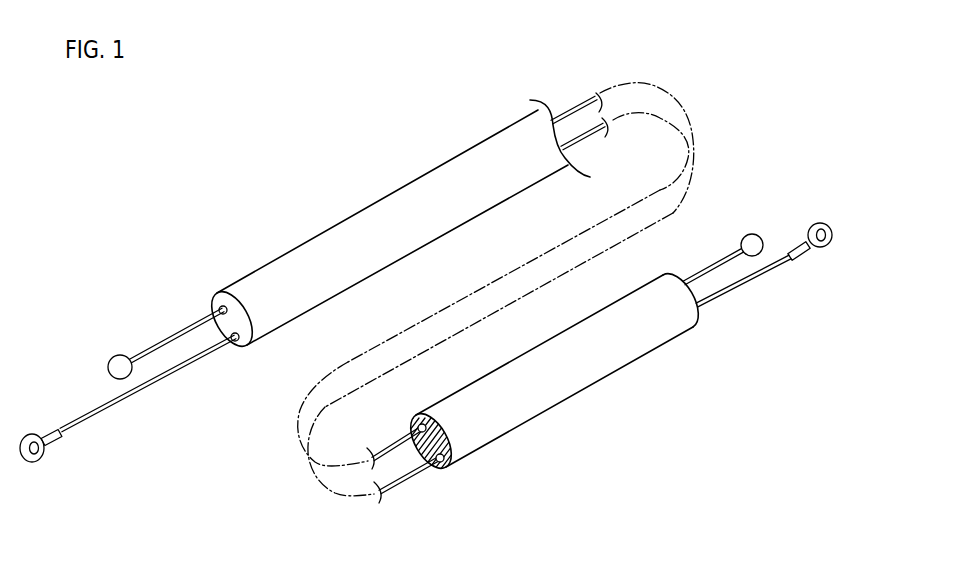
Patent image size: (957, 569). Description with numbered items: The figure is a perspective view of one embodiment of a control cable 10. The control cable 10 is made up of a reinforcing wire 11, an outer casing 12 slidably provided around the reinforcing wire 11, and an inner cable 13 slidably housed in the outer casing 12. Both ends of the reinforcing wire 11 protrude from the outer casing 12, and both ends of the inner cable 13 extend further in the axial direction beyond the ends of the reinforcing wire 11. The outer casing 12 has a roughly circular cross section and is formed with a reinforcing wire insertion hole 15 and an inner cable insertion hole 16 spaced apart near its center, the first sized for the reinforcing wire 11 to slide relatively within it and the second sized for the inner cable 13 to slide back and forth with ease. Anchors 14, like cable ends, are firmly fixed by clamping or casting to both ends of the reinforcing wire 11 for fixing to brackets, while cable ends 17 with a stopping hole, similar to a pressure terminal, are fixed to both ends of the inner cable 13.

The control cable 10 is at (398, 100).
The reinforcing wire 11 is at (176, 333).
The outer casing 12 is at (410, 200).
The inner cable 13 is at (157, 378).
The anchor 14 is at (121, 356).
The reinforcing wire insertion hole 15 is at (424, 412).
The inner cable insertion hole 16 is at (432, 470).
The cable end 17 is at (47, 449).